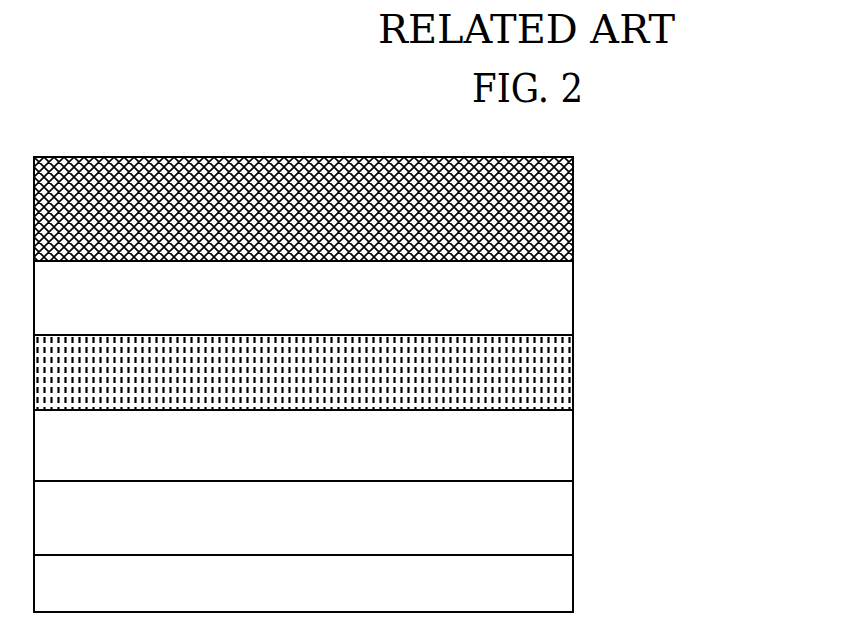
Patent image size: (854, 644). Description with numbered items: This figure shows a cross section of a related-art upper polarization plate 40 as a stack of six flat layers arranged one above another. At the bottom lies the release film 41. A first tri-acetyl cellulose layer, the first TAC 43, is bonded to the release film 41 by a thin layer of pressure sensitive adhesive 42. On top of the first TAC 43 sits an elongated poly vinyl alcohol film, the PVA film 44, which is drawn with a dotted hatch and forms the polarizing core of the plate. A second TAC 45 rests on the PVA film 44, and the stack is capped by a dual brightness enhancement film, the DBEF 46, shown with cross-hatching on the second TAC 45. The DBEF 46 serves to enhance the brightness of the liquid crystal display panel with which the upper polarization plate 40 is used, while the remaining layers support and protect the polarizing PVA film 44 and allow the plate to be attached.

The upper polarization plate 40 is at (423, 384).
The release film 41 is at (372, 581).
The pressure sensitive adhesive 42 is at (547, 525).
The first tri-acetyl cellulose 43 is at (547, 452).
The elongated poly vinyl alcohol film 44 is at (545, 378).
The second tri-acetyl cellulose 45 is at (548, 304).
The dual brightness enhancement film 46 is at (543, 212).